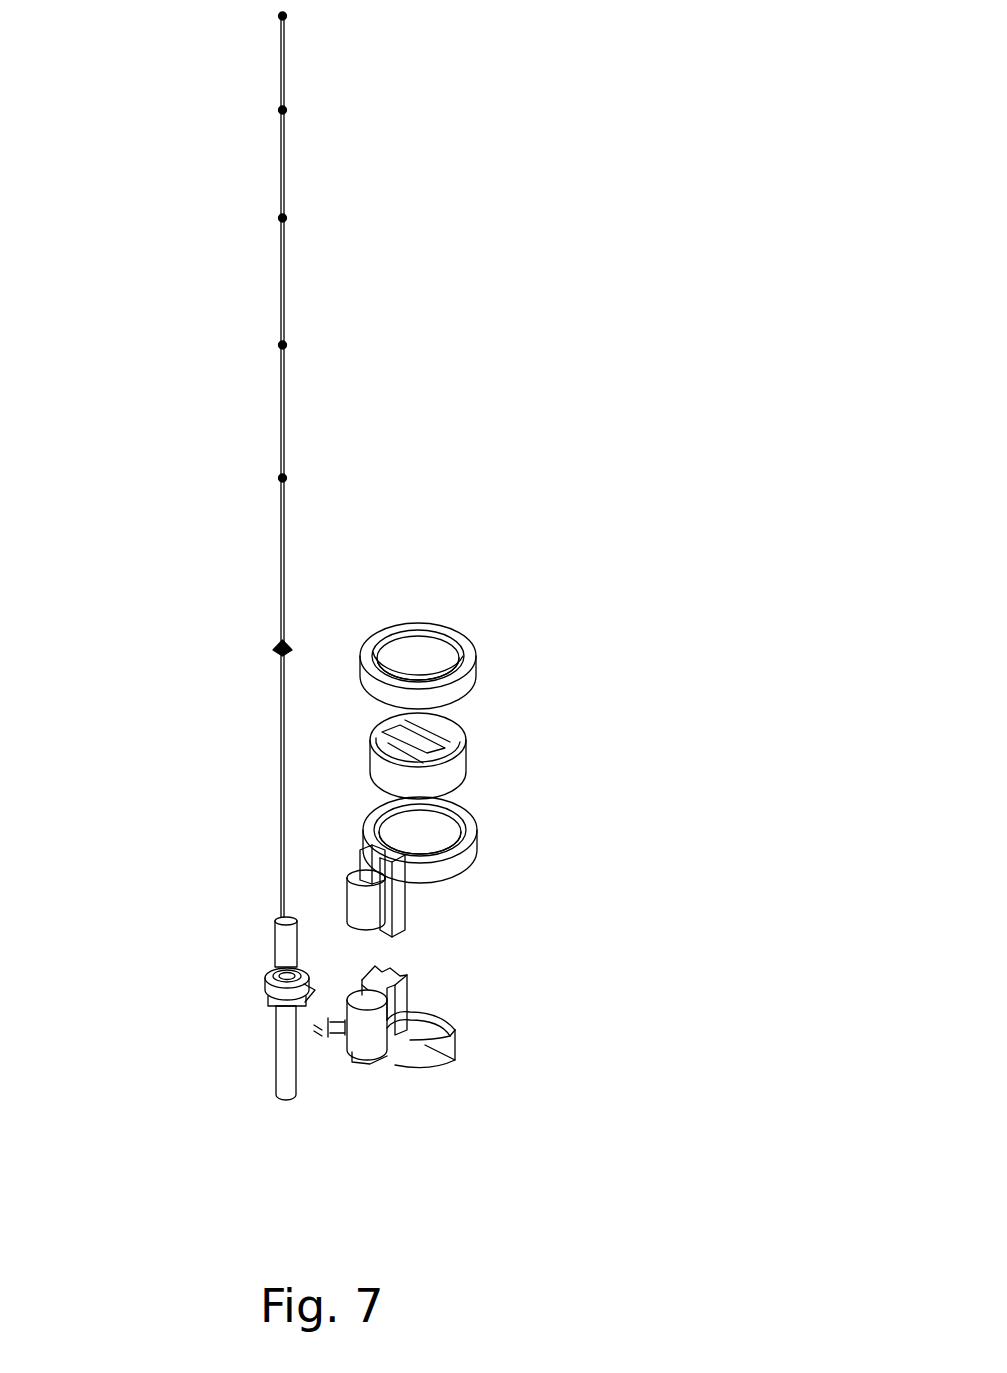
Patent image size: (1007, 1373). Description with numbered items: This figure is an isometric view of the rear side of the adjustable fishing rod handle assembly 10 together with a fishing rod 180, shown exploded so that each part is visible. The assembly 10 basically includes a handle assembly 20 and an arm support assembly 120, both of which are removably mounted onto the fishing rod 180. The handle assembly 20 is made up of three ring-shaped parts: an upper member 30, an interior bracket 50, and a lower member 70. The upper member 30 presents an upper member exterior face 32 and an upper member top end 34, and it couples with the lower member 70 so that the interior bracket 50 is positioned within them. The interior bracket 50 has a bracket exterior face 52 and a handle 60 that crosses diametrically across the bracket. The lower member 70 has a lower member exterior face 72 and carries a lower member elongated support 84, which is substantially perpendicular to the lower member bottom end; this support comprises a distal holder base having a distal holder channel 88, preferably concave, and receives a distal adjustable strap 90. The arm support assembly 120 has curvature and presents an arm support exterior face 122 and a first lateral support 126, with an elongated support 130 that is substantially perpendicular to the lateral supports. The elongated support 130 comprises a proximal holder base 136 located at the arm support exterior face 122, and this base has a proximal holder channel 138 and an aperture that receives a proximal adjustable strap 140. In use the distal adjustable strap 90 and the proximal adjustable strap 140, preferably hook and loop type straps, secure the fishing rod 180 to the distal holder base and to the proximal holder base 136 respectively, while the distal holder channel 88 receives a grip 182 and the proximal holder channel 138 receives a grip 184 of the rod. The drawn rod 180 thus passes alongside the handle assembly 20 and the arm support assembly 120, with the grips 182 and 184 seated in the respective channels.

The adjustable fishing rod handle assembly 10 is at (533, 544).
The handle assembly 20 is at (567, 704).
The upper member 30 is at (527, 568).
The upper member exterior face 32 is at (478, 672).
The upper member top end 34 is at (422, 620).
The interior bracket 50 is at (513, 755).
The bracket exterior face 52 is at (452, 775).
The handle 60 is at (395, 750).
The lower member 70 is at (520, 860).
The lower member exterior face 72 is at (470, 870).
The lower member elongated support 84 is at (412, 928).
The distal holder channel 88 is at (362, 862).
The distal adjustable strap 90 is at (366, 878).
The arm support assembly 120 is at (510, 1096).
The arm support exterior face 122 is at (423, 1045).
The first lateral support 126 is at (450, 1047).
The elongated support 130 is at (410, 997).
The proximal holder base 136 is at (393, 1052).
The proximal holder channel 138 is at (360, 980).
The proximal adjustable strap 140 is at (370, 1030).
The fishing rod 180 is at (351, 263).
The grip 182 is at (278, 948).
The grip 184 is at (290, 1082).